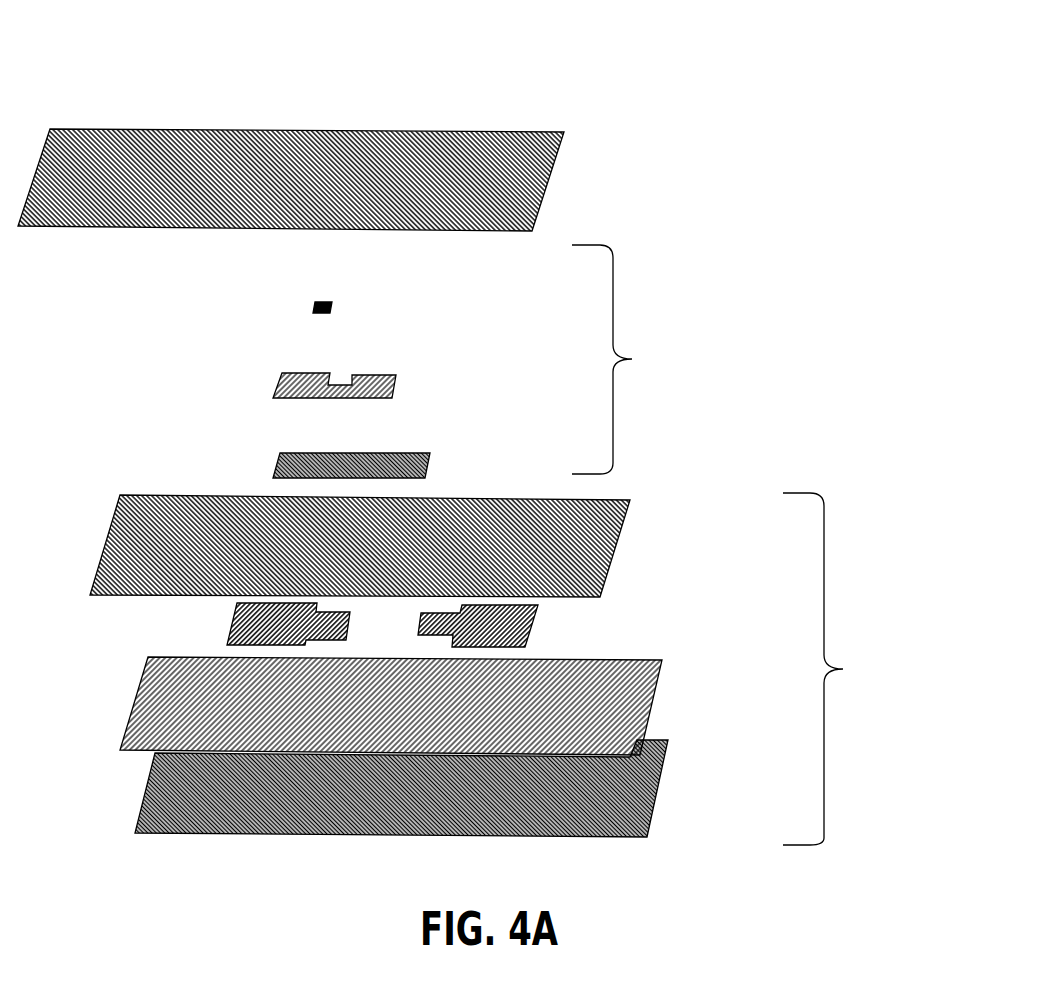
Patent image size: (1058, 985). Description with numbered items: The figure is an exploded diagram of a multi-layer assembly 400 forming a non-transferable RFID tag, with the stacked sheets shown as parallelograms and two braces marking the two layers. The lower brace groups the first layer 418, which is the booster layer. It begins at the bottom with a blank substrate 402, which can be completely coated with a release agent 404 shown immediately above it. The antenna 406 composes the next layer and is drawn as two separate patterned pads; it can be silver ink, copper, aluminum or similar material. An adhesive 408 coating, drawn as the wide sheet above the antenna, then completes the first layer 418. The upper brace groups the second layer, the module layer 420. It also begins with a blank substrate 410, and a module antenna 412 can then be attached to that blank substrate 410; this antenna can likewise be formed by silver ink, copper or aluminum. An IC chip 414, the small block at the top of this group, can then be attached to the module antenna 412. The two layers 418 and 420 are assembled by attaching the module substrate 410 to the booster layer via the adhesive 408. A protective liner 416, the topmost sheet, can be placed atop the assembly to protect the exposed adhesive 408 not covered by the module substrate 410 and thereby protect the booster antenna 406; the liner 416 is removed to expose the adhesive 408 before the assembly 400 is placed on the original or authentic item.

The multi-layer assembly 400 is at (501, 60).
The blank substrate 402 is at (663, 795).
The release agent 404 is at (647, 717).
The antenna 406 is at (535, 633).
The adhesive 408 is at (618, 548).
The blank substrate 410 is at (428, 467).
The module antenna 412 is at (400, 388).
The IC chip 414 is at (333, 305).
The protective liner 416 is at (543, 188).
The first layer 418 is at (857, 669).
The module layer 420 is at (646, 359).